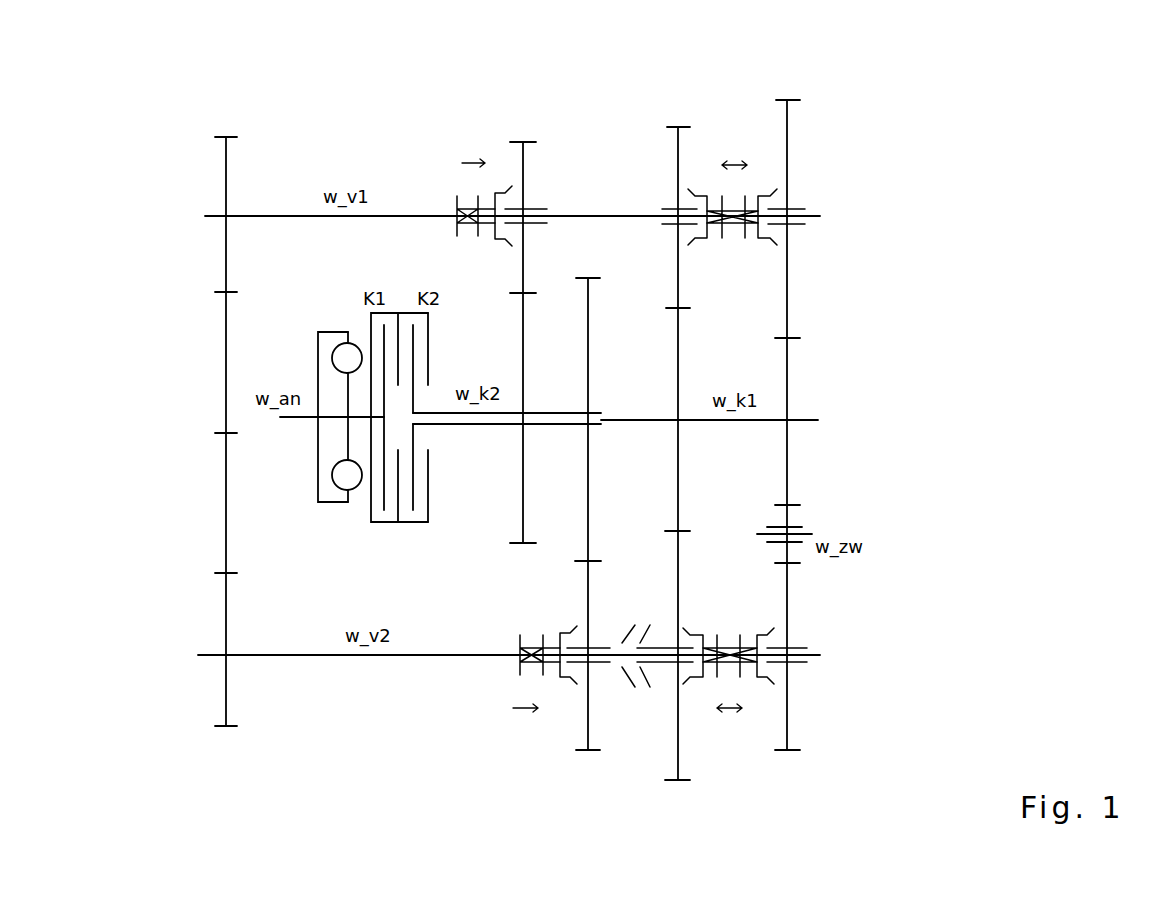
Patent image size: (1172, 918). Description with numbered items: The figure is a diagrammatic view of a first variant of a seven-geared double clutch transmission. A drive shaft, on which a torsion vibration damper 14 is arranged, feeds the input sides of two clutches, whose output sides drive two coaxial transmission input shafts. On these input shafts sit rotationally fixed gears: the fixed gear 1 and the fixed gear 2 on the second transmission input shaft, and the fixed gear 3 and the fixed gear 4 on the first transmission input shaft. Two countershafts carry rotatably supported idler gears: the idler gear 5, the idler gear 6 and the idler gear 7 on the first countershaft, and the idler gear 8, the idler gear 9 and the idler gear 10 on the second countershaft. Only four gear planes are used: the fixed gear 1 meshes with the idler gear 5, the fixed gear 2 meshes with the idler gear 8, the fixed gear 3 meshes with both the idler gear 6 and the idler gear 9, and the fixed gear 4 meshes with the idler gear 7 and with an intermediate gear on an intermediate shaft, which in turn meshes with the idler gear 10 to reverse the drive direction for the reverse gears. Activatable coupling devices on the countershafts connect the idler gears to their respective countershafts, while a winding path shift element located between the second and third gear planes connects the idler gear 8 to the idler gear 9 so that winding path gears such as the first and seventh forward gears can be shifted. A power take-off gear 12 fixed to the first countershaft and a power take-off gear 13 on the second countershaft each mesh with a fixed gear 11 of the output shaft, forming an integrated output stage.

The fixed gear of the second transmission input shaft 1 is at (522, 307).
The fixed gear of the second transmission input shaft 2 is at (589, 290).
The fixed gear of the first transmission input shaft 3 is at (677, 355).
The fixed gear of the first transmission input shaft 4 is at (787, 355).
The idler gear of the first countershaft 5 is at (522, 265).
The idler gear of the first countershaft 6 is at (678, 268).
The idler gear of the first countershaft 7 is at (787, 282).
The idler gear of the second countershaft 8 is at (588, 577).
The idler gear of the second countershaft 9 is at (677, 552).
The idler gear of the second countershaft 10 is at (787, 618).
The fixed gear of the output shaft 11 is at (226, 337).
The power take-off gear of the first countershaft 12 is at (226, 248).
The power take-off gear of the second countershaft 13 is at (226, 613).
The torsion vibration damper 14 is at (318, 485).